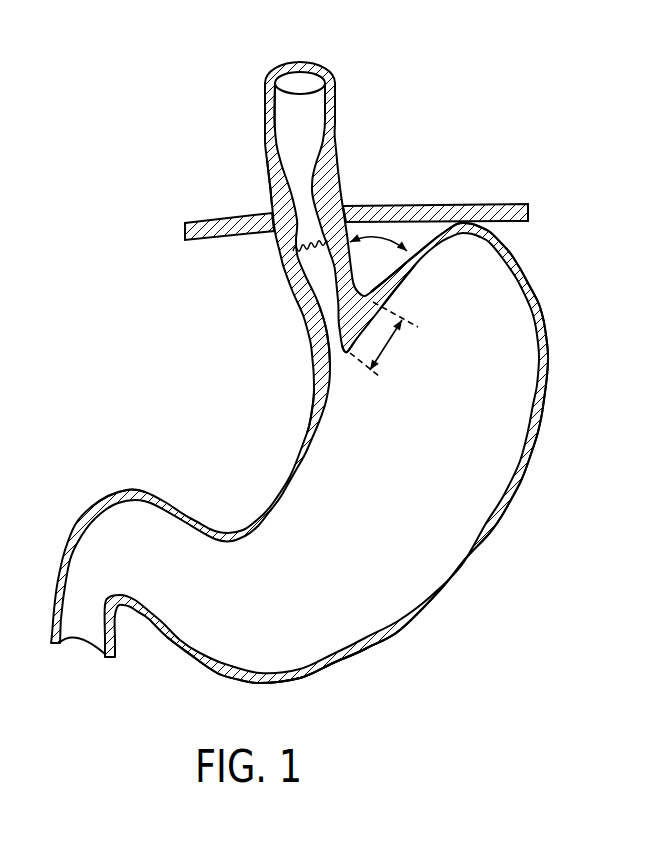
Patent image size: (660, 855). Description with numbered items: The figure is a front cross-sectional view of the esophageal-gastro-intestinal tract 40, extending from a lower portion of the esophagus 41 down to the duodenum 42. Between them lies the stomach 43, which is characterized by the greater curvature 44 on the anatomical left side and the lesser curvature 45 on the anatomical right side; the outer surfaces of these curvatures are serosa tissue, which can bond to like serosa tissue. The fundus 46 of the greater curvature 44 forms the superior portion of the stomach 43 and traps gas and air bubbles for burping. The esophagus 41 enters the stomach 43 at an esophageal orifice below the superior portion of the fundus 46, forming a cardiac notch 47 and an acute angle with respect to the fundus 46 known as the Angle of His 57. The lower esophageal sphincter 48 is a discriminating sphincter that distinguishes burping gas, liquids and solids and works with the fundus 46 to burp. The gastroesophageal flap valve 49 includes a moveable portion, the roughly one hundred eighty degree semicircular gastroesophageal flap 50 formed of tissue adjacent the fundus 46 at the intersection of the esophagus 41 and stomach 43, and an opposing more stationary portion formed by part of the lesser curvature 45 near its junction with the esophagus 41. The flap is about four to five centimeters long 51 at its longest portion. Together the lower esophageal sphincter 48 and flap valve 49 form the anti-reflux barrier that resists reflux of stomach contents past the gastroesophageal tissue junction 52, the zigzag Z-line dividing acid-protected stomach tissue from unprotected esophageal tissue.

The esophageal-gastro-intestinal tract 40 is at (202, 97).
The esophagus 41 is at (313, 101).
The duodenum 42 is at (132, 510).
The stomach 43 is at (572, 390).
The greater curvature 44 is at (393, 637).
The lesser curvature 45 is at (304, 433).
The fundus 46 is at (463, 221).
The cardiac notch 47 is at (382, 276).
The lower esophageal sphincter 48 is at (269, 178).
The gastroesophageal flap valve 49 is at (318, 328).
The gastroesophageal flap 50 is at (347, 357).
The length of gastroesophageal flap 51 is at (387, 345).
The gastroesophageal tissue junction 52 is at (292, 258).
The Angle of His 57 is at (379, 240).